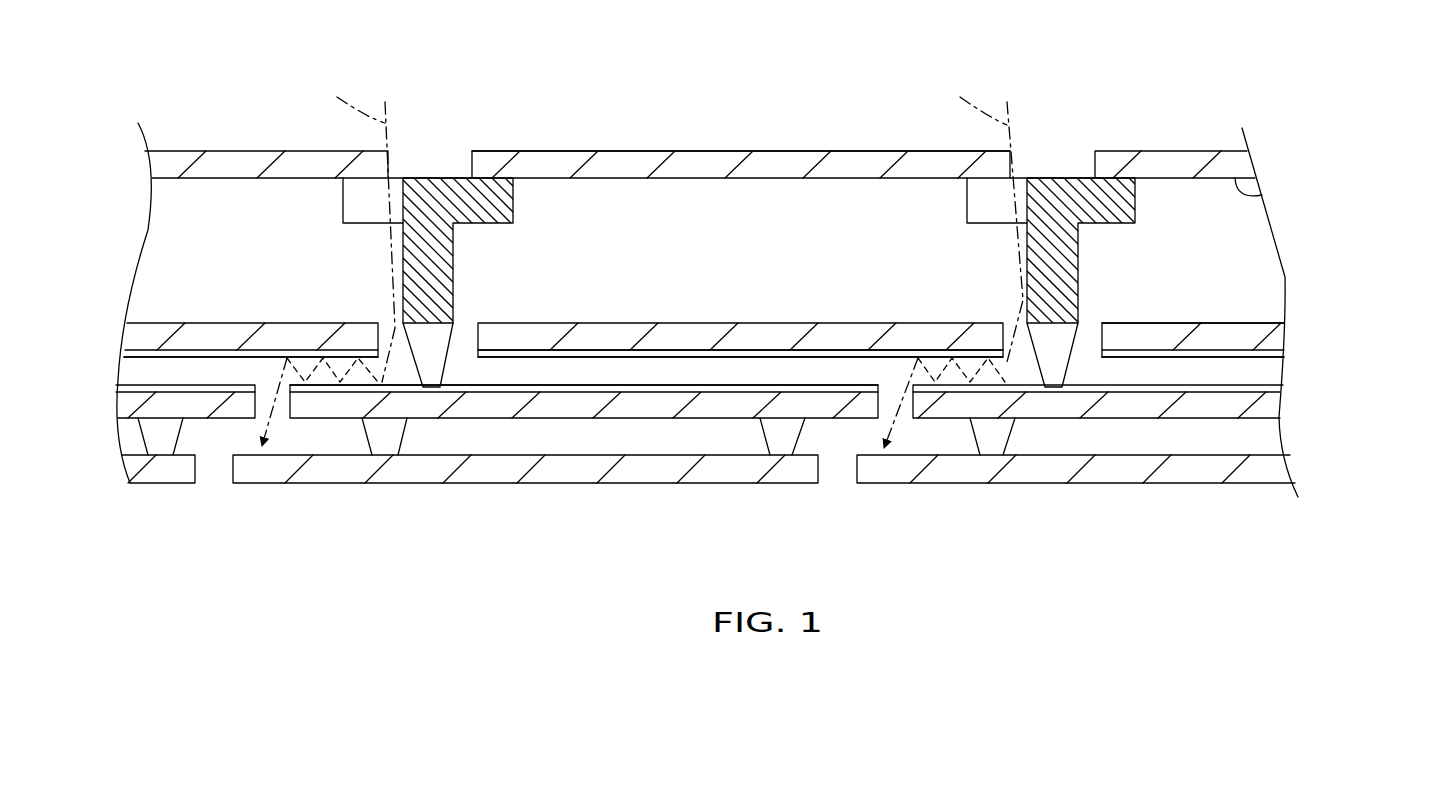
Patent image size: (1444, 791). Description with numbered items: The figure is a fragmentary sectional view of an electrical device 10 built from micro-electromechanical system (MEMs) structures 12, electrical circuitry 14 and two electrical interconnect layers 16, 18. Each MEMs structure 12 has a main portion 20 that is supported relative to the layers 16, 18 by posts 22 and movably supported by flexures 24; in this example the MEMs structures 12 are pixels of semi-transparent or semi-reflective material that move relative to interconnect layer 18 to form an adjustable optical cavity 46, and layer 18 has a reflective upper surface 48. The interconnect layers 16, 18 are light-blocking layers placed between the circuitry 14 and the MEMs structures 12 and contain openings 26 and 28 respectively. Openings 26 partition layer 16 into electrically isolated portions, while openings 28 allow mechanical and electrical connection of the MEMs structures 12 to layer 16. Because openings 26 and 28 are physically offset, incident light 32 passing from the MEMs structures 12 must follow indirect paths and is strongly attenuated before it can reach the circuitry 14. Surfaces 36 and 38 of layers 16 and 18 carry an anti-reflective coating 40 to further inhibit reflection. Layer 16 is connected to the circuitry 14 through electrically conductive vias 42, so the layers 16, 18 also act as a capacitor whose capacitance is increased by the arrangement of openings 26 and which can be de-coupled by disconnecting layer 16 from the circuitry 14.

The electrical device 10 is at (1224, 100).
The micro-electromechanical system (MEMs) structures 12 is at (248, 146).
The electrical circuitry 14 is at (152, 470).
The electrical interconnect layer 16 is at (1272, 407).
The electrical interconnect layer 18 is at (1273, 340).
The main portion 20 is at (763, 155).
The posts 22 is at (453, 252).
The flexures 24 is at (513, 195).
The openings 26 is at (272, 388).
The openings 28 is at (383, 324).
The incident light 32 is at (642, 256).
The surface 36 is at (582, 388).
The surface 38 is at (693, 357).
The anti-reflective coating 40 is at (779, 354).
The electrically conductive vias 42 is at (150, 433).
The adjustable optical cavity 46 is at (1265, 193).
The upper surface 48 is at (1187, 323).